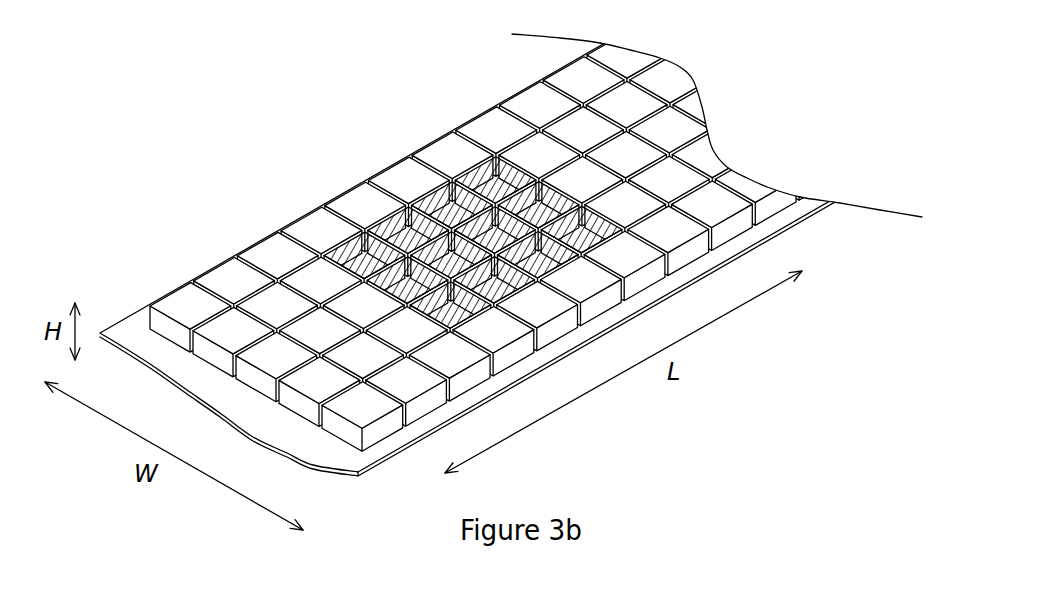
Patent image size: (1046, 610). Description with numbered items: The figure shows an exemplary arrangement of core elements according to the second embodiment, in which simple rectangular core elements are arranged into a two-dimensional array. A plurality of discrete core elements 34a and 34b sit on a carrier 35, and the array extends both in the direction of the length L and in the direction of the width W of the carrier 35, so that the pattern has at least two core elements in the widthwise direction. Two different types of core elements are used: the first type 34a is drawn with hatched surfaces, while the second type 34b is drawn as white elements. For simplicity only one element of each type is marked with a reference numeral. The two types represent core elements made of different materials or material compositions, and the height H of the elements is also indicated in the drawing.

The core elements of a first type 34a is at (390, 228).
The core elements of a second type 34b is at (516, 229).
The carrier 35 is at (337, 458).